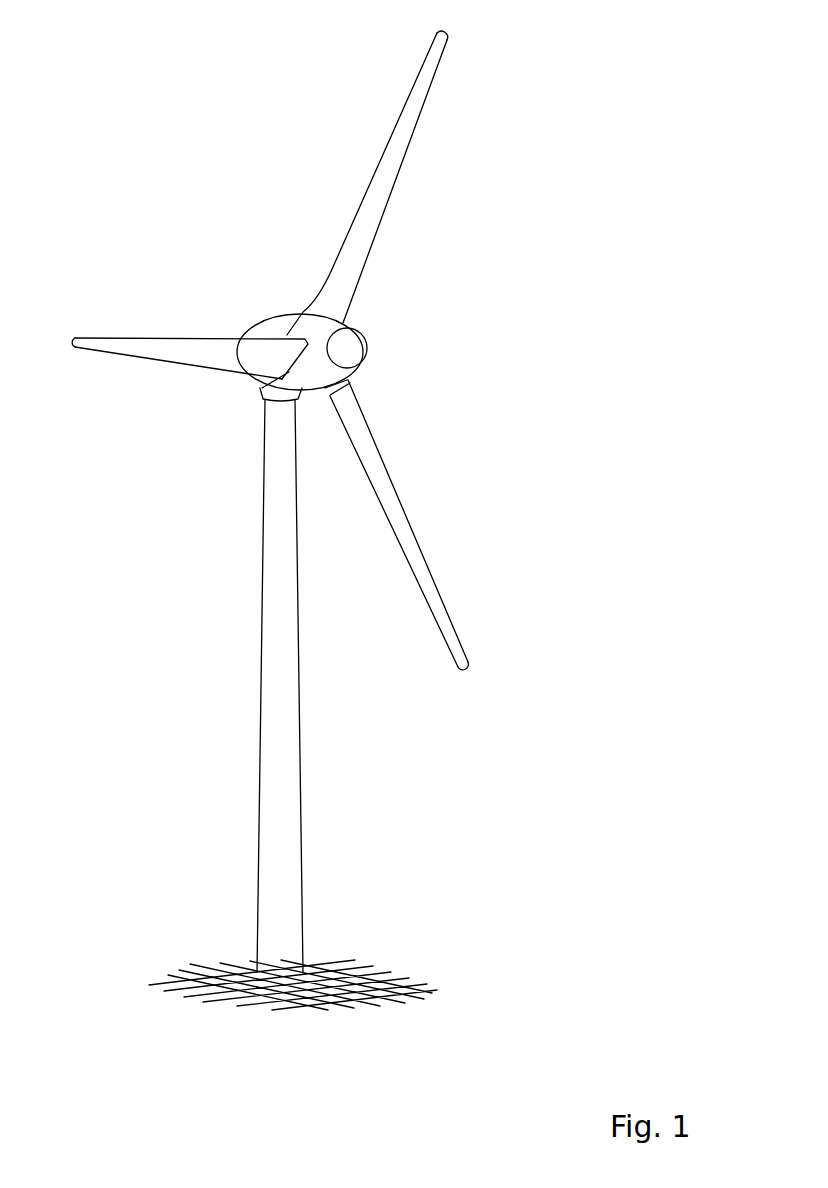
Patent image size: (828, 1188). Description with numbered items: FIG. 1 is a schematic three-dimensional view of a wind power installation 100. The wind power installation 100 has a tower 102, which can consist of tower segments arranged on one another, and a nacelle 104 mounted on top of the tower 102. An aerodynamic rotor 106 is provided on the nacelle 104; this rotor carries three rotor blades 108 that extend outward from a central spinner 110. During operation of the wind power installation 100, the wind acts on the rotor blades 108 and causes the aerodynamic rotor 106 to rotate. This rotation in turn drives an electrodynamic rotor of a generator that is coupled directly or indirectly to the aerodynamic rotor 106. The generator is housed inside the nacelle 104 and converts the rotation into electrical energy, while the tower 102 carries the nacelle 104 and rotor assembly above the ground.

The wind power installation 100 is at (222, 462).
The tower 102 is at (287, 773).
The nacelle 104 is at (275, 330).
The aerodynamic rotor 106 is at (428, 279).
The rotor blades 108 is at (400, 138).
The spinner 110 is at (352, 348).